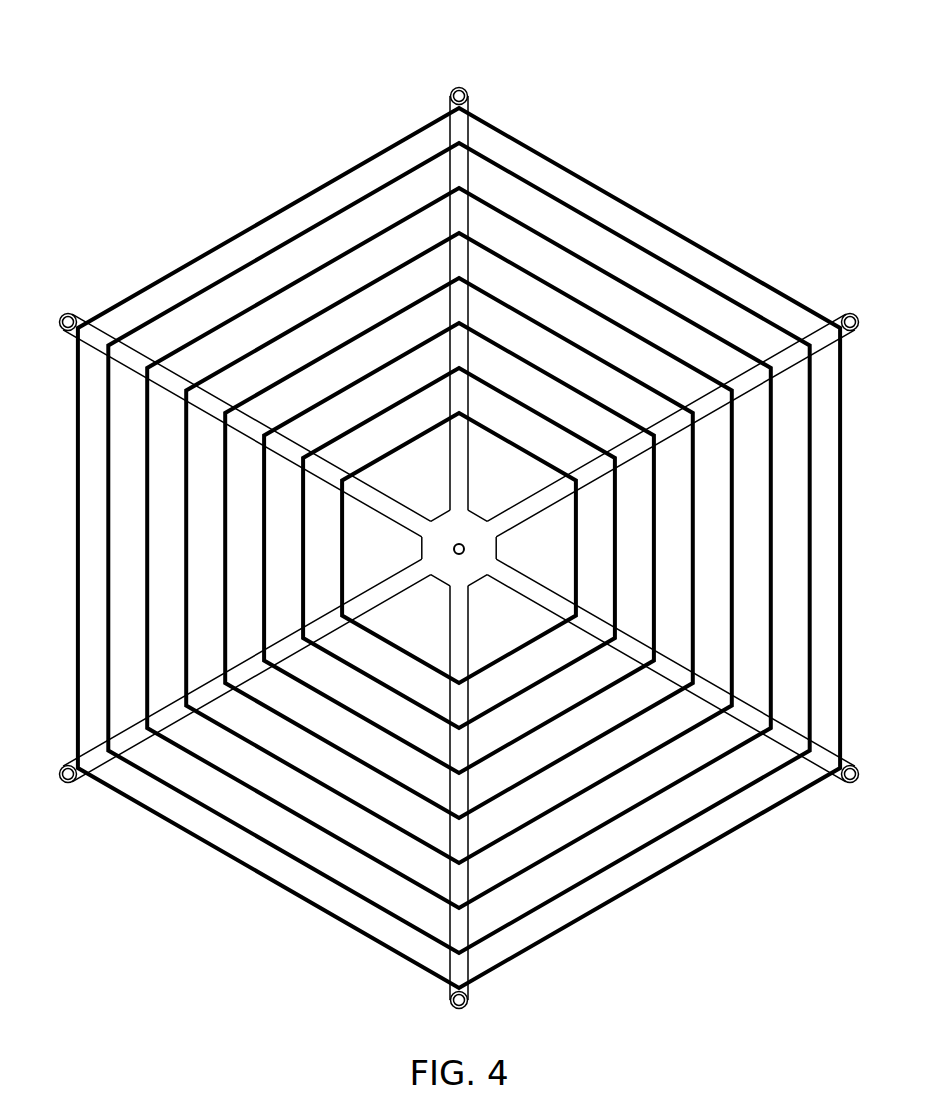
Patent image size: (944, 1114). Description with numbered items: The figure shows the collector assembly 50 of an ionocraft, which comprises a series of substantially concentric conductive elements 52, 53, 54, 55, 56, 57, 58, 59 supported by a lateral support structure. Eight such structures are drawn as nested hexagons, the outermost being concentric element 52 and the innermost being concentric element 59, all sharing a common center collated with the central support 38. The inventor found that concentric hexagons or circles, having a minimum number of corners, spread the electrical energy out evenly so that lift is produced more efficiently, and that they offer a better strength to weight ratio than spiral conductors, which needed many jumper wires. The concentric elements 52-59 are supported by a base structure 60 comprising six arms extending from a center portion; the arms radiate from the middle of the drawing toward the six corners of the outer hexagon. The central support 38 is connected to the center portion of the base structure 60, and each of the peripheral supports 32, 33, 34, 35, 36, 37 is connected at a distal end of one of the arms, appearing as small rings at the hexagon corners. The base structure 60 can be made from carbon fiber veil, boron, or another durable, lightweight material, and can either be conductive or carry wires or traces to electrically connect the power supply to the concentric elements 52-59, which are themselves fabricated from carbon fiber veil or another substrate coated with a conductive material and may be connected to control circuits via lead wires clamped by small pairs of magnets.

The peripheral support 32 is at (59, 772).
The peripheral support 33 is at (59, 321).
The peripheral support 34 is at (468, 92).
The peripheral support 35 is at (860, 321).
The peripheral support 36 is at (860, 772).
The peripheral support 37 is at (468, 1004).
The central support 38 is at (475, 540).
The collector assembly 50 is at (792, 55).
The concentric conductive element 52 is at (280, 885).
The concentric conductive element 53 is at (300, 861).
The concentric conductive element 54 is at (316, 825).
The concentric conductive element 55 is at (335, 791).
The concentric conductive element 56 is at (352, 756).
The concentric conductive element 57 is at (368, 721).
The concentric conductive element 58 is at (387, 686).
The concentric conductive element 59 is at (407, 654).
The base structure 60 is at (459, 548).